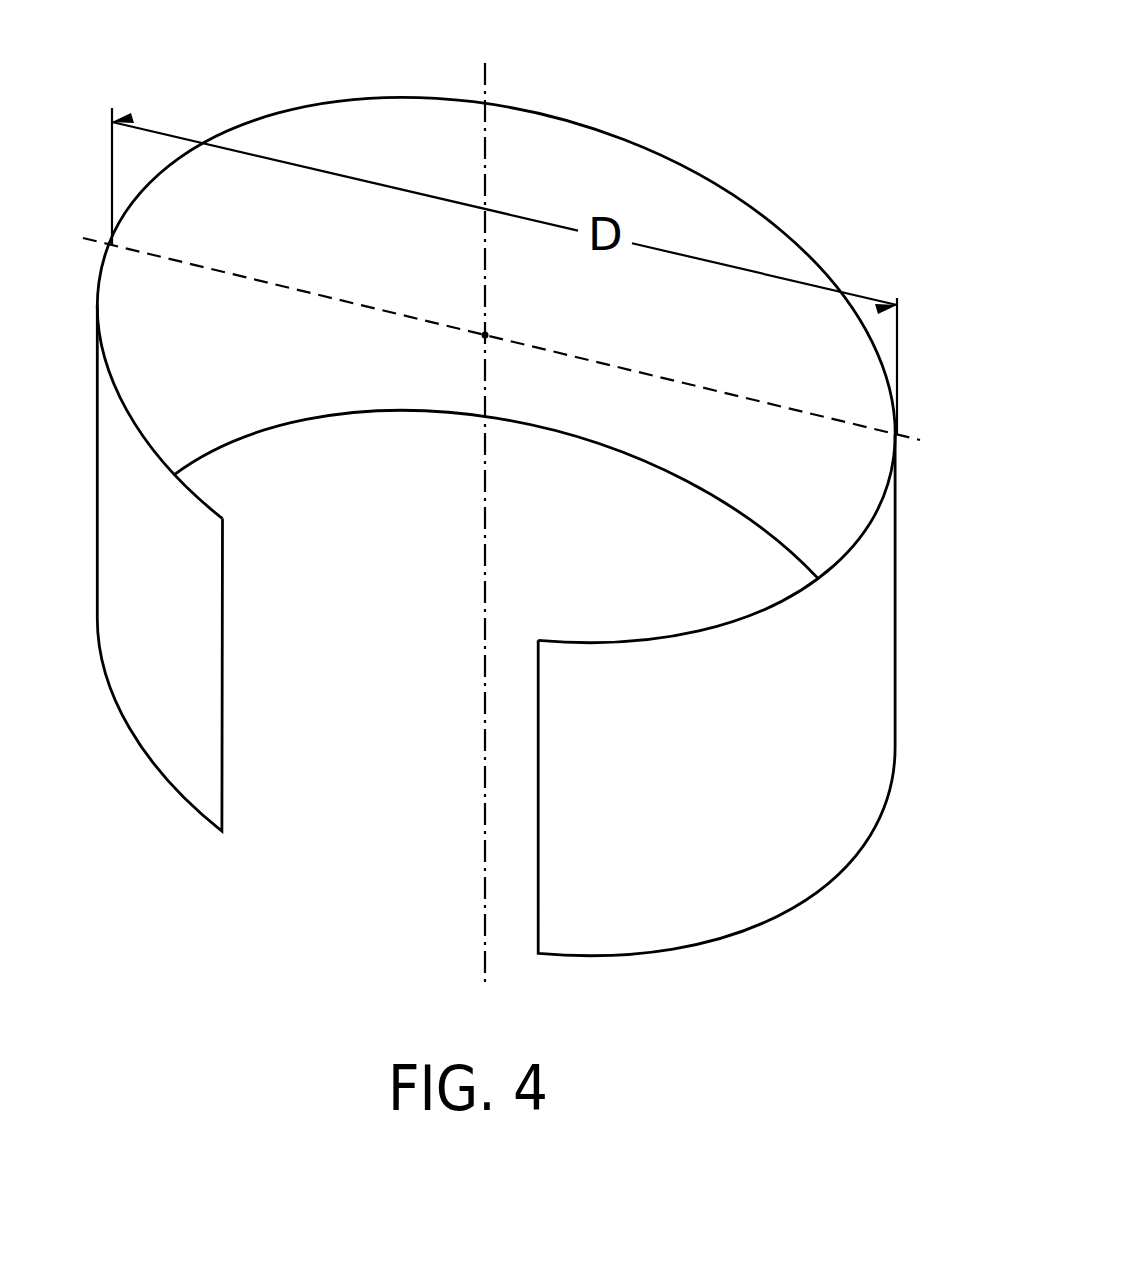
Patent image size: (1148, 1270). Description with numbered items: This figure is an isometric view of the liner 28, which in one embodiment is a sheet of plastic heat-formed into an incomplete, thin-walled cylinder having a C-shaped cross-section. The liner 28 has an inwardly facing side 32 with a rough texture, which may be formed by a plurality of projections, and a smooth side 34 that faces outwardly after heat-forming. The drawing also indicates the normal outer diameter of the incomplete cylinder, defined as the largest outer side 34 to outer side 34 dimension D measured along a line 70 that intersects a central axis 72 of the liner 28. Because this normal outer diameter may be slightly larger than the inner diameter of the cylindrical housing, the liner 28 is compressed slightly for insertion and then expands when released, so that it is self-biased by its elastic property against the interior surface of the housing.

The liner 28 is at (533, 482).
The inwardly facing side 32 is at (647, 158).
The outer side 34 is at (880, 610).
The line 70 is at (347, 305).
The central axis 72 is at (487, 84).